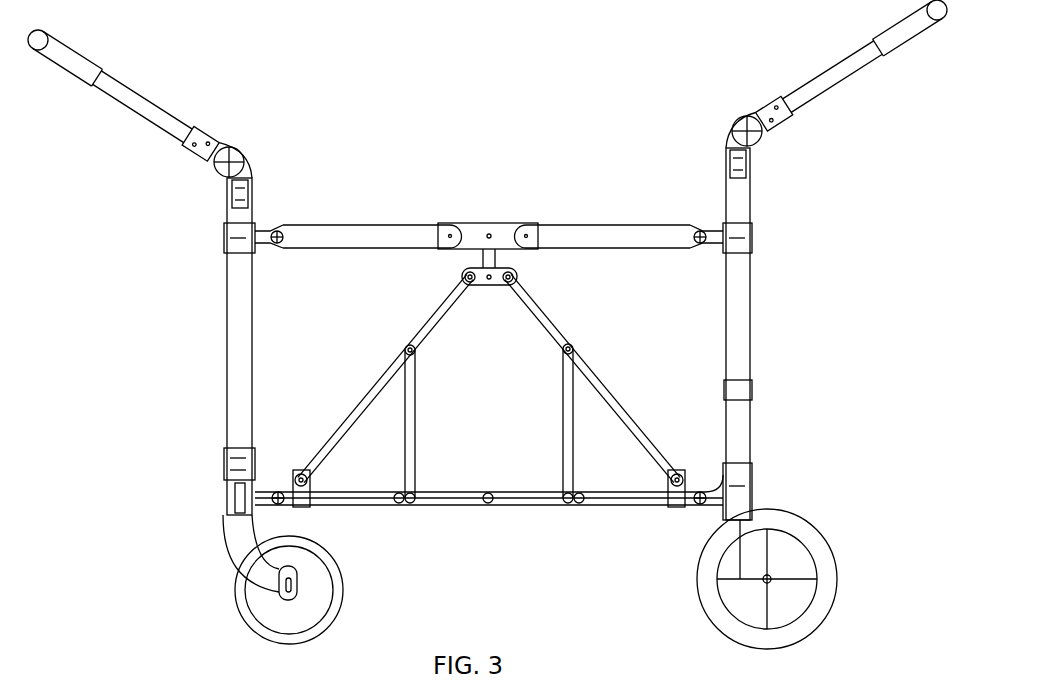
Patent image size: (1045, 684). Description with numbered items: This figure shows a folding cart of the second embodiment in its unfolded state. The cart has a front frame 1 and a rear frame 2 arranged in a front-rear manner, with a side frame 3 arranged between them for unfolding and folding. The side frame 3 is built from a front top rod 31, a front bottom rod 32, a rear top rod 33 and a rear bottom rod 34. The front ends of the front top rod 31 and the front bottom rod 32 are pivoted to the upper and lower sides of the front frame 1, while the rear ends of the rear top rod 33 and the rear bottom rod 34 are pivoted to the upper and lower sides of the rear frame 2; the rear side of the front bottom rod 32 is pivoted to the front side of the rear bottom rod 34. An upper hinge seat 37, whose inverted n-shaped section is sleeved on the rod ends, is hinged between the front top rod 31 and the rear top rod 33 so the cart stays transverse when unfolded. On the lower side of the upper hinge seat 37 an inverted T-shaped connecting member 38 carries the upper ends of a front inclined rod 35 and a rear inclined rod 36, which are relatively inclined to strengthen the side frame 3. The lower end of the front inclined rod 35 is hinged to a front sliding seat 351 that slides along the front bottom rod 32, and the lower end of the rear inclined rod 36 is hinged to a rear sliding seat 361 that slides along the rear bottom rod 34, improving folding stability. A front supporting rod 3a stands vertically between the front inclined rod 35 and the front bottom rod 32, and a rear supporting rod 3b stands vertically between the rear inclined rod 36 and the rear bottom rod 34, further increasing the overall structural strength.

The front frame 1 is at (822, 324).
The rear frame 2 is at (185, 337).
The side frame 3 is at (489, 346).
The front top rod 31 is at (608, 242).
The front bottom rod 32 is at (622, 502).
The rear top rod 33 is at (383, 243).
The rear bottom rod 34 is at (435, 503).
The front inclined rod 35 is at (585, 365).
The rear inclined rod 36 is at (390, 365).
The upper hinge seat 37 is at (505, 240).
The connecting member 38 is at (493, 284).
The front supporting rod 3a is at (565, 410).
The rear supporting rod 3b is at (413, 410).
The front sliding seat 351 is at (678, 508).
The rear sliding seat 361 is at (310, 507).